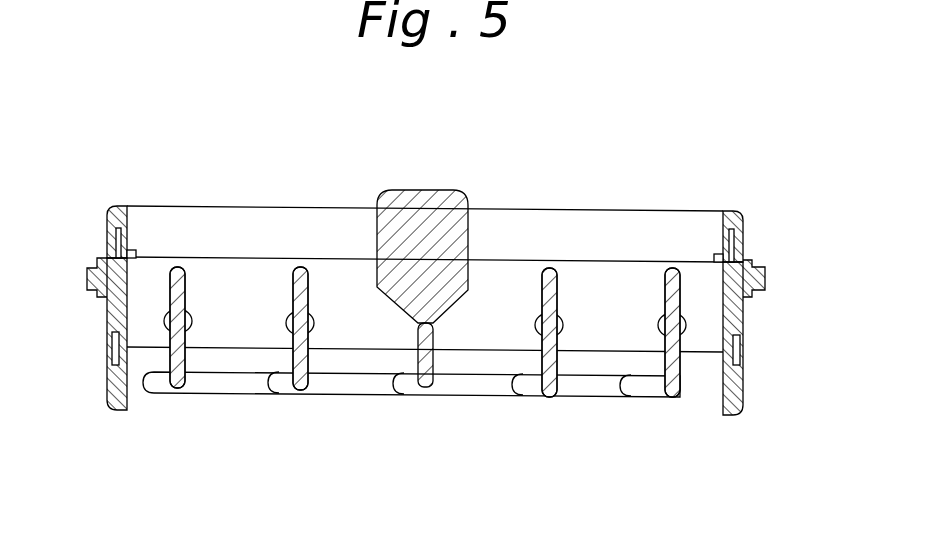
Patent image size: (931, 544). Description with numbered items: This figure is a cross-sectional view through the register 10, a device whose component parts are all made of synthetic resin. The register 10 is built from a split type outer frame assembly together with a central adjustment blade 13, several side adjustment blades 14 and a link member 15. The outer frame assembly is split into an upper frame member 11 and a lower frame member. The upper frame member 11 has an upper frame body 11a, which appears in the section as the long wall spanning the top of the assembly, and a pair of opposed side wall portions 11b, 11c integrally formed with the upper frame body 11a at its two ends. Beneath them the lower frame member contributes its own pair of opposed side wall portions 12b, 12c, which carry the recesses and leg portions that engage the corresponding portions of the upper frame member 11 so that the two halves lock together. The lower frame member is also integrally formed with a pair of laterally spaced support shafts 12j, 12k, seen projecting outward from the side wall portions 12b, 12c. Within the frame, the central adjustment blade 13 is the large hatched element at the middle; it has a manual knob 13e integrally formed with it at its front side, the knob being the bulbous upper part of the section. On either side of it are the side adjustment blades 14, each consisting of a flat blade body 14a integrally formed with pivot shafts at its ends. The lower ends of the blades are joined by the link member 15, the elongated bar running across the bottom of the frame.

The register 10 is at (561, 186).
The upper frame member 11 is at (621, 209).
The upper frame body 11a is at (507, 228).
The side wall portion 11b is at (112, 207).
The side wall portion 11c is at (733, 221).
The side wall portion 12b is at (88, 364).
The side wall portion 12c is at (776, 318).
The support shaft 12j is at (95, 280).
The support shaft 12k is at (760, 279).
The central adjustment blade 13 is at (389, 248).
The manual knob 13e is at (387, 242).
The side adjustment blade 14 is at (190, 365).
The flat blade body 14a is at (308, 366).
The link member 15 is at (377, 401).